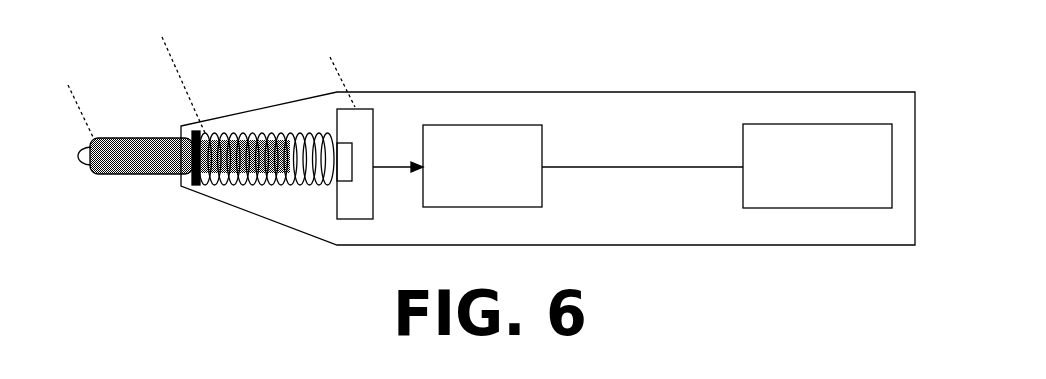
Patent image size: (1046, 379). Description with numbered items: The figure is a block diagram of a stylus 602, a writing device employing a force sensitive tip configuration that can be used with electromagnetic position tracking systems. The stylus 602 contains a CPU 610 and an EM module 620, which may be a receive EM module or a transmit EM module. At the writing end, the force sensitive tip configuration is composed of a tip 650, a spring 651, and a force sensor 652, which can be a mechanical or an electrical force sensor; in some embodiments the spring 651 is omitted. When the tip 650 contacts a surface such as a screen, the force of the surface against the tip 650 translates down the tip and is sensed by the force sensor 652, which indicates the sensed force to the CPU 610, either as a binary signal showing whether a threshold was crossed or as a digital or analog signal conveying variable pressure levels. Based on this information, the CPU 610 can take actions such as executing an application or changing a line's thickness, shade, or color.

The stylus 602 is at (707, 90).
The CPU 610 is at (490, 122).
The EM module 620 is at (842, 122).
The tip 650 is at (95, 180).
The spring 651 is at (237, 125).
The force sensor 652 is at (348, 220).